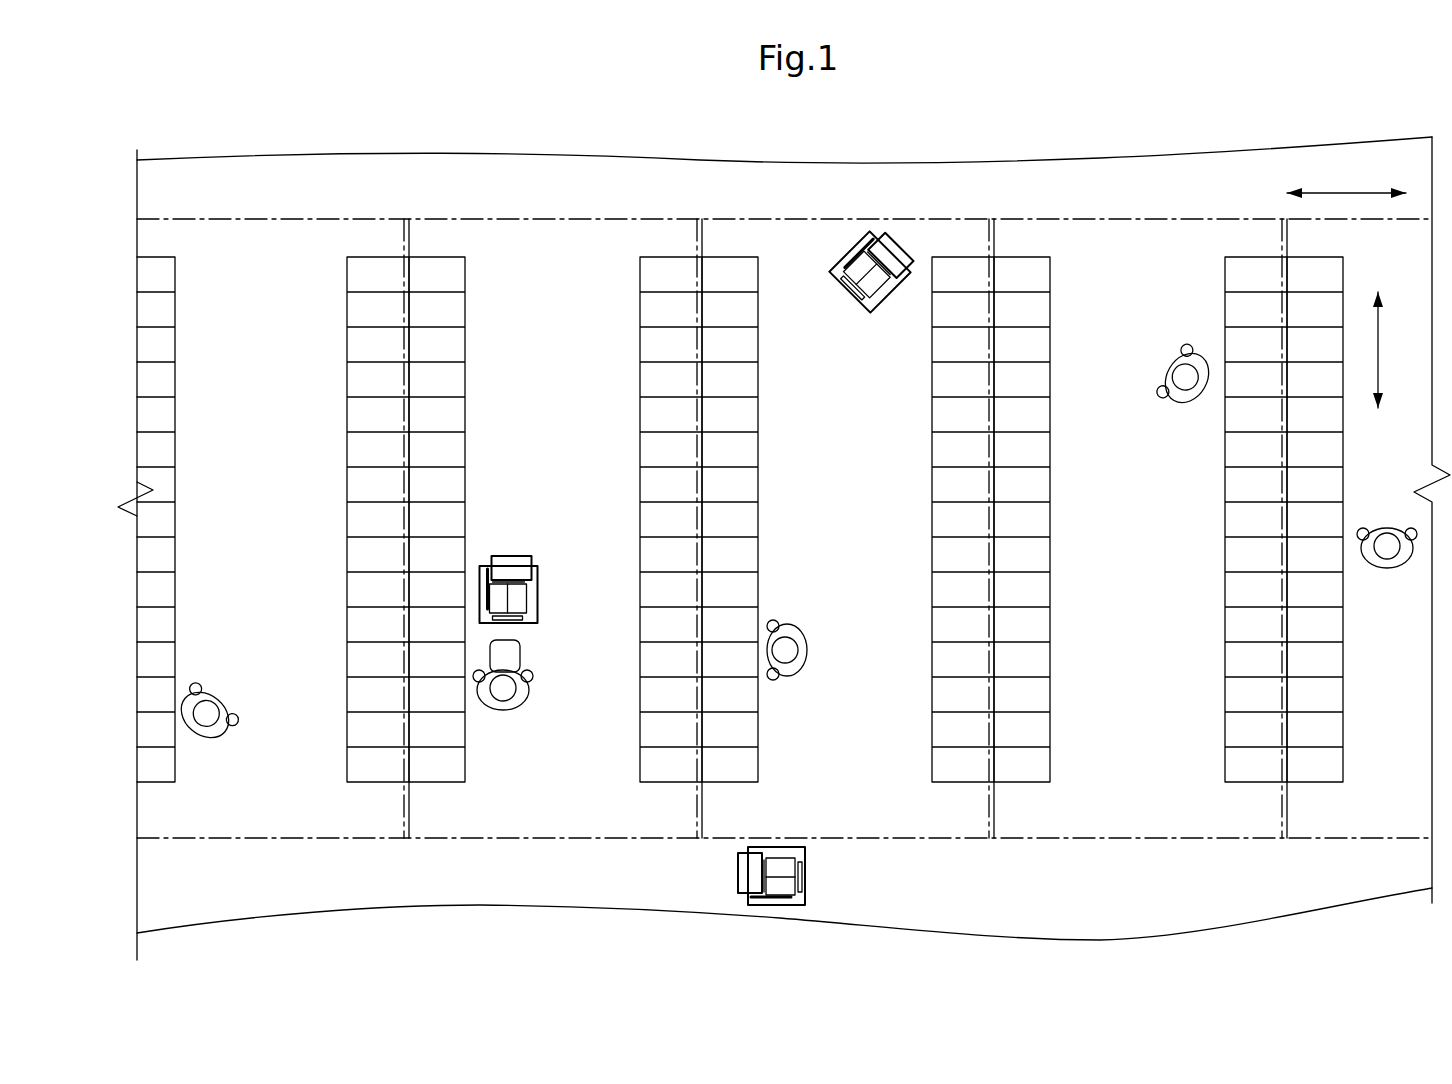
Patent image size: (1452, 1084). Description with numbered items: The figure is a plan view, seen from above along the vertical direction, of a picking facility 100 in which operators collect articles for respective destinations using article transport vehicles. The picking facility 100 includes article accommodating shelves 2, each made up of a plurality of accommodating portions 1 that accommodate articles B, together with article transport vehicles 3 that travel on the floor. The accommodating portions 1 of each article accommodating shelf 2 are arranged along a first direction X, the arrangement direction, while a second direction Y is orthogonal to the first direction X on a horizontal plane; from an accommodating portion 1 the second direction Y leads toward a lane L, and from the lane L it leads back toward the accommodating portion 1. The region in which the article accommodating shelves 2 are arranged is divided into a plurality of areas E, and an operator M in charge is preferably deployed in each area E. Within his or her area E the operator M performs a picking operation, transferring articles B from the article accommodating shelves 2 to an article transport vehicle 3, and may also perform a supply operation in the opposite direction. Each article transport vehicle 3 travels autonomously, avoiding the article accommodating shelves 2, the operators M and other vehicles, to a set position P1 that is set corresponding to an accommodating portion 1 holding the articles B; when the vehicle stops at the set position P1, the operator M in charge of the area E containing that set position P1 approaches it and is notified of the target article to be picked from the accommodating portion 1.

The picking facility 100 is at (892, 140).
The accommodating portion 1 is at (447, 347).
The article accommodating shelf 2 is at (193, 500).
The article transport vehicle 3 is at (508, 556).
The set position P1 is at (540, 550).
The operator M is at (213, 692).
The article B is at (512, 646).
The lane L is at (268, 315).
The area E is at (245, 838).
The first direction X is at (1389, 350).
The second direction Y is at (1346, 178).